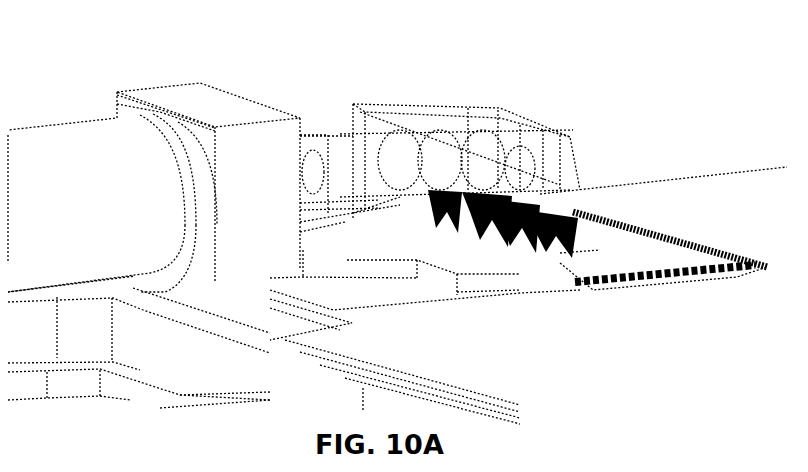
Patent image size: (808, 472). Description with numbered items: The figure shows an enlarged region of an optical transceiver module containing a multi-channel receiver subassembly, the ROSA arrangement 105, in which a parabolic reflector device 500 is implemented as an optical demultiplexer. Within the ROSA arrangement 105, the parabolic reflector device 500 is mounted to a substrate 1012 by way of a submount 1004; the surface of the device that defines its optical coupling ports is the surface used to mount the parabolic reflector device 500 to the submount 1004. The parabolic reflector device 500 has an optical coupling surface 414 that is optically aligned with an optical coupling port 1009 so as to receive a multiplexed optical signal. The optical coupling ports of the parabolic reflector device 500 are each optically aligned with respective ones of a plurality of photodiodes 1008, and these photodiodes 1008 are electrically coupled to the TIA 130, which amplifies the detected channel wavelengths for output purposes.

The optical coupling port 1009 is at (229, 112).
The submount 1004 is at (450, 272).
The optical coupling surface 414 is at (387, 202).
The parabolic reflector device 500 is at (489, 101).
The photodiodes 1008 is at (520, 260).
The TIA 130 is at (633, 254).
The substrate 1012 is at (707, 191).
The ROSA arrangement 105 is at (608, 123).